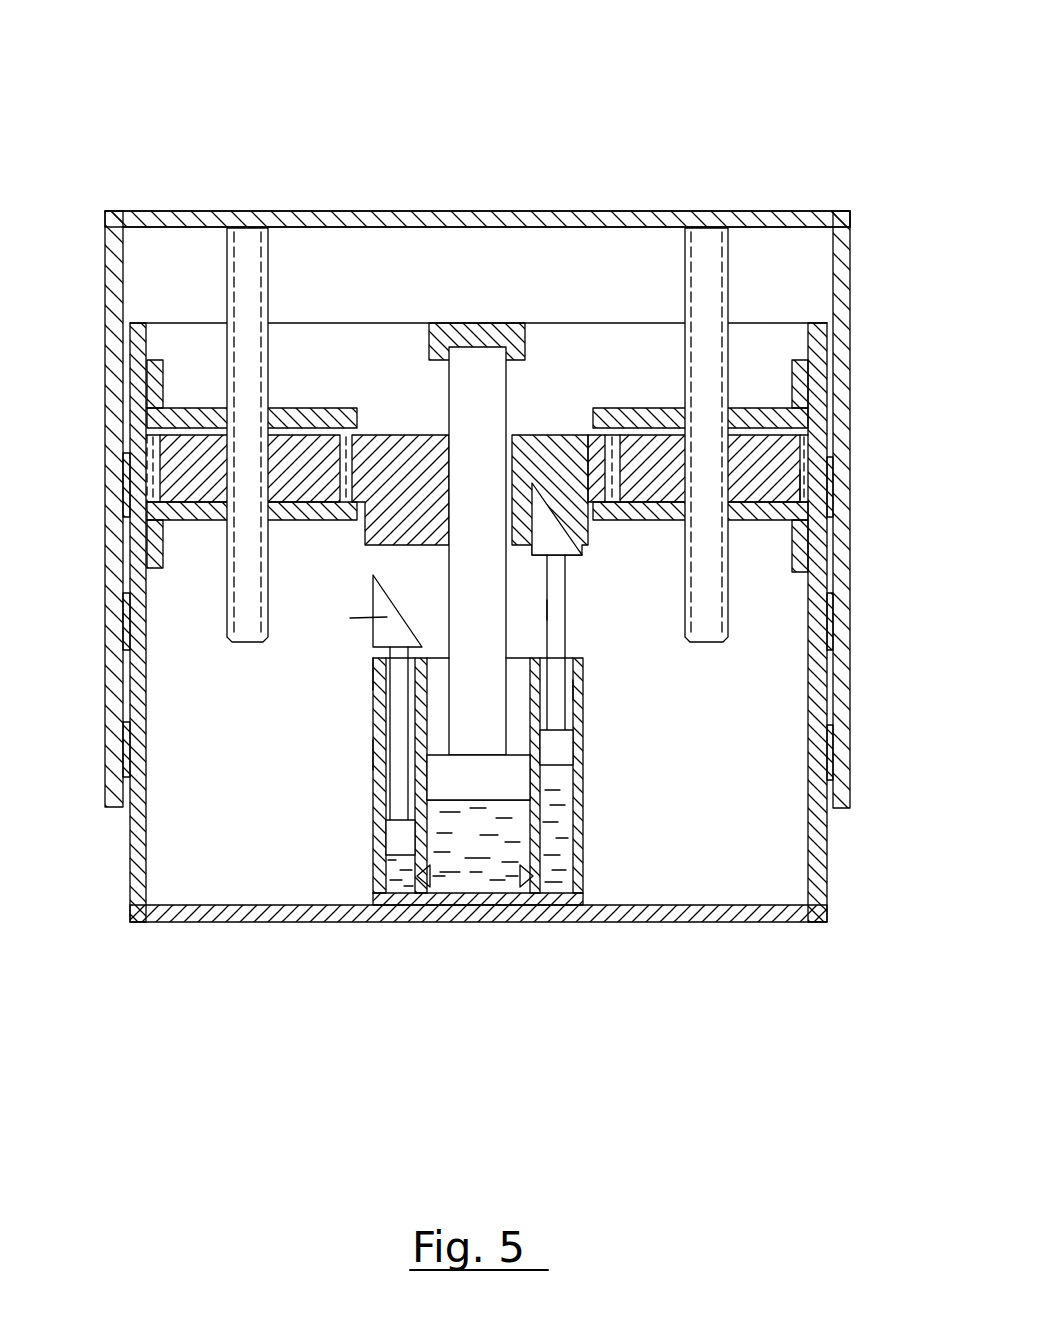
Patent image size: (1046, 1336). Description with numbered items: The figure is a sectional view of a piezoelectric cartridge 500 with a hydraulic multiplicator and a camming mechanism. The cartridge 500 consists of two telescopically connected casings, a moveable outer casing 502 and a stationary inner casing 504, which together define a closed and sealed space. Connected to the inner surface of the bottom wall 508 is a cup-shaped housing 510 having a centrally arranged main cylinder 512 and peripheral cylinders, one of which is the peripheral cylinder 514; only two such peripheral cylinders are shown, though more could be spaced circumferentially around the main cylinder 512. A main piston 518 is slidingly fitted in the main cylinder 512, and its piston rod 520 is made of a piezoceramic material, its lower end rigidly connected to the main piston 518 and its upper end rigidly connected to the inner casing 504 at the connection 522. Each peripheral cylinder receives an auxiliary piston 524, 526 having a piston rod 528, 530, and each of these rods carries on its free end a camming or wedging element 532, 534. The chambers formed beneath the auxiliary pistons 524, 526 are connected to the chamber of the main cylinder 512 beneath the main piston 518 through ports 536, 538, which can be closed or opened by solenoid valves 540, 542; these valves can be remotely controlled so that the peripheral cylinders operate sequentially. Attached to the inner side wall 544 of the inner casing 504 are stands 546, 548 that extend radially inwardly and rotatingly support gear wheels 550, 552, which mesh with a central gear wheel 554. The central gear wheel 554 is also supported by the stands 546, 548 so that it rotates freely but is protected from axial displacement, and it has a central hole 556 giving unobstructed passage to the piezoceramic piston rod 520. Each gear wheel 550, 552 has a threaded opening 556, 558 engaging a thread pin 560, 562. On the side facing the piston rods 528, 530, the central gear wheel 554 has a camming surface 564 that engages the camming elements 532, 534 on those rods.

The piezoelectric cartridge 500 is at (277, 70).
The outer casing 502 is at (112, 213).
The inner casing 504 is at (512, 912).
The bottom wall 508 is at (818, 827).
The cup-shaped housing 510 is at (583, 765).
The main cylinder 512 is at (478, 865).
The peripheral cylinder 514 is at (372, 753).
The main piston 518 is at (522, 880).
The piston rod 520 is at (467, 382).
The connection of piston rod to inner casing 522 is at (443, 338).
The auxiliary piston 524 is at (402, 840).
The auxiliary piston 526 is at (583, 688).
The piston rod 528 is at (372, 677).
The piston rod 530 is at (555, 610).
The camming element 532 is at (387, 617).
The camming element 534 is at (552, 488).
The port 536 is at (413, 875).
The port 538 is at (568, 870).
The solenoid valve 540 is at (443, 887).
The solenoid valve 542 is at (537, 880).
The inner side wall 544 is at (809, 323).
The stand 546 is at (178, 420).
The stand 548 is at (162, 565).
The gear wheel 550 is at (298, 467).
The gear wheel 552 is at (750, 480).
The central gear wheel 554 is at (368, 430).
The central hole 556 is at (205, 521).
The threaded opening 558 is at (745, 485).
The thread pin 560 is at (242, 268).
The thread pin 562 is at (703, 255).
The camming surface 564 is at (533, 483).